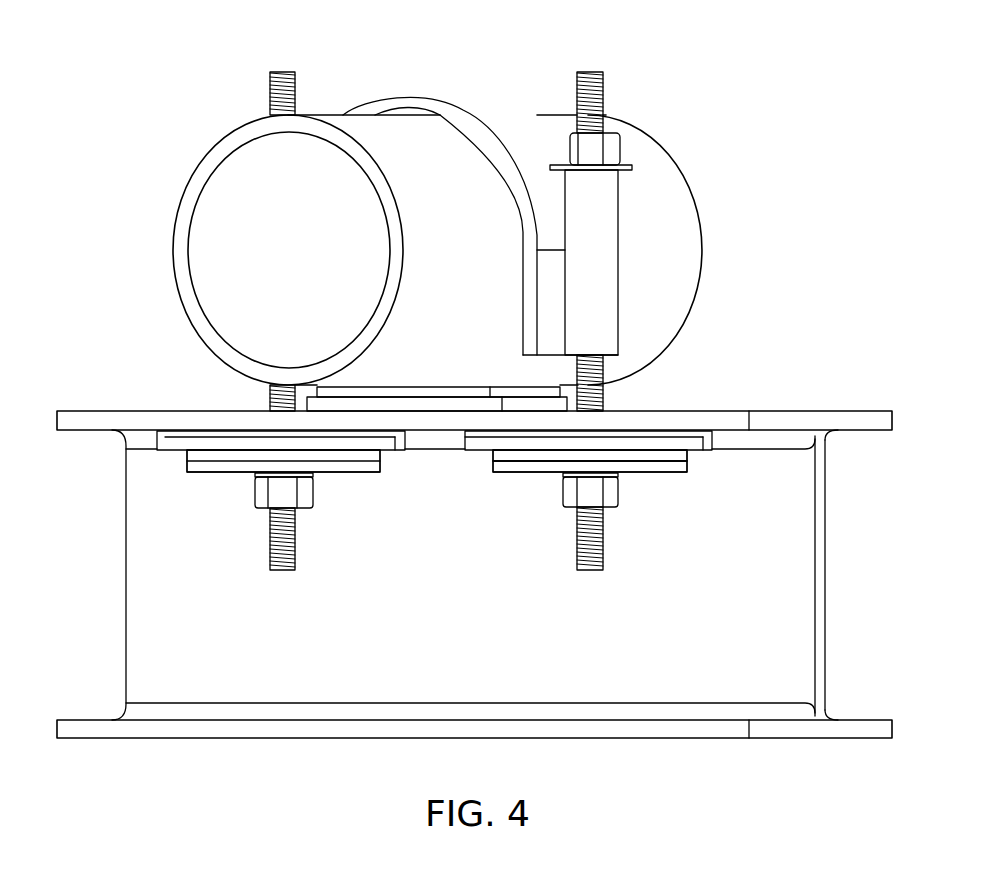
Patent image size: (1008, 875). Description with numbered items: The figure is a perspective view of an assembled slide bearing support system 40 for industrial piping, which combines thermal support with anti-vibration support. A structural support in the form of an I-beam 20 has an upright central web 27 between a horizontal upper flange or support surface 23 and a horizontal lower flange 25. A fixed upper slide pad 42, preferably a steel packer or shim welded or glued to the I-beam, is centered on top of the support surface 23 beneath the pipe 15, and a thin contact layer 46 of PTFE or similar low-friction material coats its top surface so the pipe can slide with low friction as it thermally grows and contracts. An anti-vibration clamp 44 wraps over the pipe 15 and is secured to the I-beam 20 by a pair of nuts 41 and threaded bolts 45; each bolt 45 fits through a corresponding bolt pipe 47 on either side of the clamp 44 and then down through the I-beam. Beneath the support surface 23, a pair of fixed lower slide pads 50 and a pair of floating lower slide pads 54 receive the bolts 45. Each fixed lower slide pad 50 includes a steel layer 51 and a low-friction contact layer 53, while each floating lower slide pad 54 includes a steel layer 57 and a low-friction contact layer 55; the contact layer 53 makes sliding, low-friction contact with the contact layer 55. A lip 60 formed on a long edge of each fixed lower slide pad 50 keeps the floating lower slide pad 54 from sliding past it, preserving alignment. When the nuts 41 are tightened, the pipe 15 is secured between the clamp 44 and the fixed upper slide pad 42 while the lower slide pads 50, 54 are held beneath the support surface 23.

The pipe 15 is at (463, 256).
The I-beam 20 is at (461, 551).
The upper flange 23 is at (822, 418).
The lower flange 25 is at (865, 720).
The central web 27 is at (812, 572).
The slide bearing support system 40 is at (401, 211).
The nut 41 is at (620, 147).
The fixed upper slide pad 42 is at (392, 405).
The anti-vibration clamp 44 is at (483, 104).
The threaded bolt 45 is at (602, 75).
The contact layer 46 is at (456, 390).
The bolt pipe 47 is at (612, 263).
The fixed lower slide pad 50 is at (439, 473).
The steel layer 51 is at (657, 432).
The contact layer 53 is at (392, 455).
The floating lower slide pad 54 is at (353, 482).
The contact layer 55 is at (493, 455).
The steel layer 57 is at (640, 473).
The lip 60 is at (398, 446).